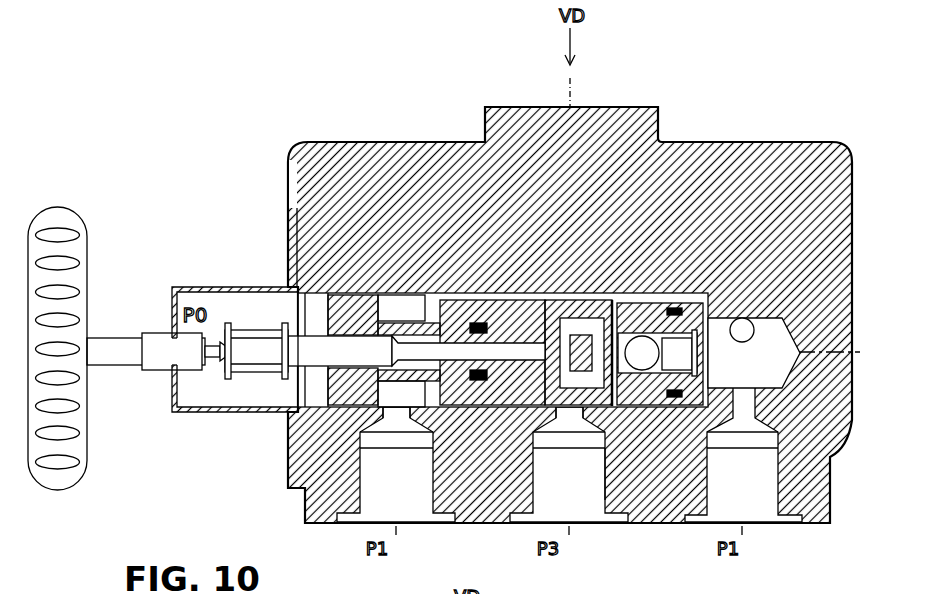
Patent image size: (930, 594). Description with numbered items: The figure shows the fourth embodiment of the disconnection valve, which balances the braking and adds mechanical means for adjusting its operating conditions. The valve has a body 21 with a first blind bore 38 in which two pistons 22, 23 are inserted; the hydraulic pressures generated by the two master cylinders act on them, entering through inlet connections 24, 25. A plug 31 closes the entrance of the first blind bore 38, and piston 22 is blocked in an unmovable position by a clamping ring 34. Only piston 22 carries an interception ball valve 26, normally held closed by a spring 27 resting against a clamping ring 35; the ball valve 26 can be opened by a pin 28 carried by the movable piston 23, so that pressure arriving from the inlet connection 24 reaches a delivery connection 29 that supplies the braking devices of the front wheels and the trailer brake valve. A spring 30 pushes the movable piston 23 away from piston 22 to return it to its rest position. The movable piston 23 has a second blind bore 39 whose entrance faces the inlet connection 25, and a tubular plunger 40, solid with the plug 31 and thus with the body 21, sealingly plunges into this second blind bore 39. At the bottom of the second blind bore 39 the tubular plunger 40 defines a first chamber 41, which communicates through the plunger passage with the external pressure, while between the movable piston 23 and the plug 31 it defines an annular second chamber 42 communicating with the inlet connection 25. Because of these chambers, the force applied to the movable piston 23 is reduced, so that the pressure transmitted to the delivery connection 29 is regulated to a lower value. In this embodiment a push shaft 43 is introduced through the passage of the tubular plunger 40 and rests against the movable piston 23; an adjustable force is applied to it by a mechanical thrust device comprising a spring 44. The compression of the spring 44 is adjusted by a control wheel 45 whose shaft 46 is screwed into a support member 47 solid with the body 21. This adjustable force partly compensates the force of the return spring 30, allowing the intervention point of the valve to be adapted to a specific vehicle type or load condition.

The body 21 is at (352, 165).
The piston 22 is at (687, 292).
The movable piston 23 is at (538, 292).
The inlet connection 24 is at (709, 483).
The inlet connection 25 is at (366, 504).
The interception ball valve 26 is at (636, 406).
The spring 27 is at (664, 406).
The pin 28 is at (605, 292).
The delivery connection 29 is at (535, 504).
The spring 30 is at (562, 422).
The plug 31 is at (350, 292).
The clamping ring 34 is at (605, 486).
The clamping ring 35 is at (708, 366).
The first blind bore 38 is at (450, 292).
The second blind bore 39 is at (488, 384).
The tubular plunger 40 is at (402, 422).
The first chamber 41 is at (574, 422).
The second chamber 42 is at (392, 422).
The push shaft 43 is at (472, 384).
The spring 44 is at (253, 323).
The control wheel 45 is at (88, 250).
The shaft 46 is at (157, 345).
The support member 47 is at (222, 413).